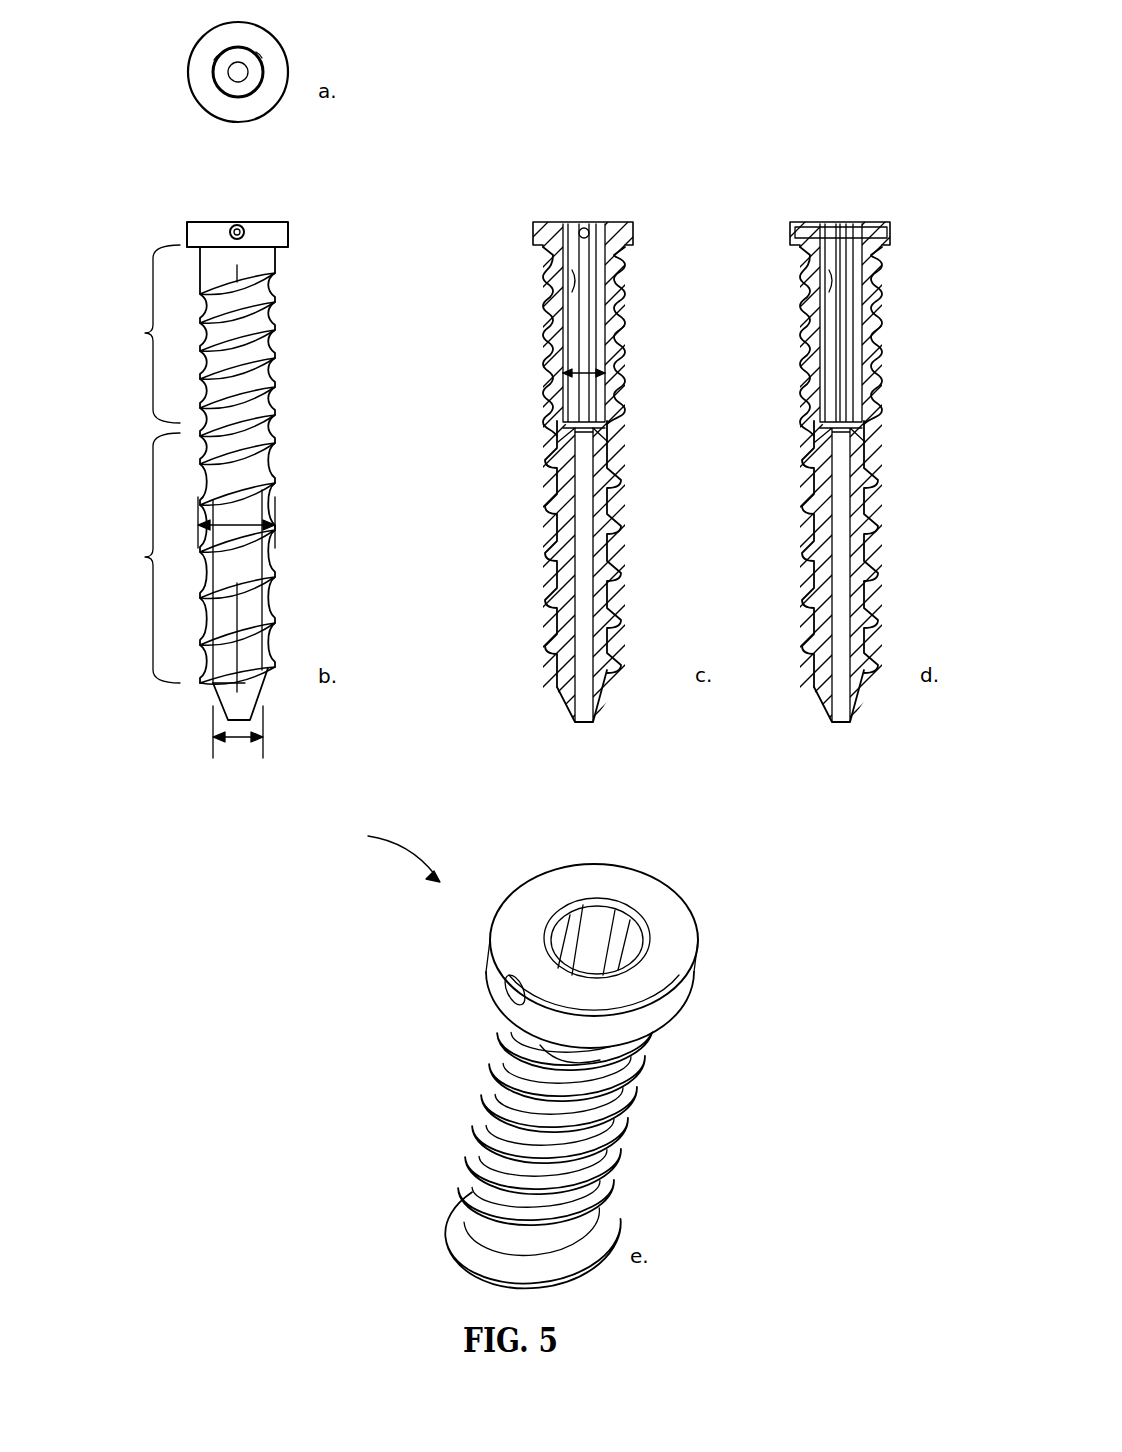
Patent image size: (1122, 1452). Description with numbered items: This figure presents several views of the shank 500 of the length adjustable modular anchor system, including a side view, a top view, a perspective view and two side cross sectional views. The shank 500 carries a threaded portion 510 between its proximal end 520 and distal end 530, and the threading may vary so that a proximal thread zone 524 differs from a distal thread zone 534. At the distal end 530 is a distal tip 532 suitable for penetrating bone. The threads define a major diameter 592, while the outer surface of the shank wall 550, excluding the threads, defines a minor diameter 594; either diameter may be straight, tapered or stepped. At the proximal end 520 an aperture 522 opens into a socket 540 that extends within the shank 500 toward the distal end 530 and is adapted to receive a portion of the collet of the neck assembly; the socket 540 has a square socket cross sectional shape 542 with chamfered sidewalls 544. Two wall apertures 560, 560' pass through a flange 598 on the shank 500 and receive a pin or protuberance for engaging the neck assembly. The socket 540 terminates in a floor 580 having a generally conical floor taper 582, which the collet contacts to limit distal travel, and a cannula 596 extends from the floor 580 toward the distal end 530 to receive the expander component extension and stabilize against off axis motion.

The shank 500 is at (456, 943).
The threaded portion 510 is at (275, 335).
The proximal end 520 is at (272, 222).
The drive socket / bore opening 522 is at (222, 70).
The proximal thread zone 524 is at (138, 334).
The distal end 530 is at (567, 749).
The distal tip 532 is at (262, 697).
The distal thread zone 534 is at (138, 558).
The socket 540 is at (585, 337).
The socket cross sectional shape 542 is at (255, 68).
The chamfered sidewalls 544 is at (575, 282).
The wall 550 is at (553, 253).
The wall aperture 560 is at (535, 573).
The wall aperture 560' is at (768, 562).
The floor 580 is at (612, 430).
The floor taper 582 is at (553, 432).
The major diameter 592 is at (277, 505).
The minor diameter 594 is at (240, 740).
The cannula 596 is at (585, 612).
The flange 598 is at (290, 232).